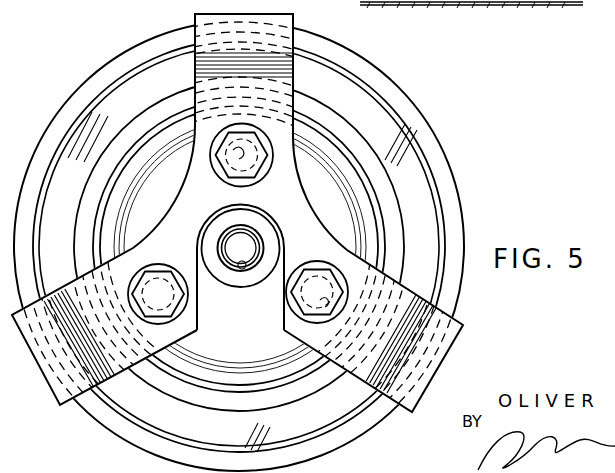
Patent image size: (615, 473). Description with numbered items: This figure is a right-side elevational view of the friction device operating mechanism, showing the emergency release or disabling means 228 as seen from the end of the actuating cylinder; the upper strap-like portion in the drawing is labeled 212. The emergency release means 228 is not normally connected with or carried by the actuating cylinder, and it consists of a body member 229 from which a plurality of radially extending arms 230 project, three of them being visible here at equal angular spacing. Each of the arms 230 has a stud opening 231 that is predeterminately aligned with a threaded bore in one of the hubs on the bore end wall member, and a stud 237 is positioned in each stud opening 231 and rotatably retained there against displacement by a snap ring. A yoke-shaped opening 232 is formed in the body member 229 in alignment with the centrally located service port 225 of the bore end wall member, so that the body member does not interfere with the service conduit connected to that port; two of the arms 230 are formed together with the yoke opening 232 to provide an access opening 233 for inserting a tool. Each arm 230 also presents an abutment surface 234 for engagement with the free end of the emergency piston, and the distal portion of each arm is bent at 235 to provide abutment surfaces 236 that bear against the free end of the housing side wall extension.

The belt 212 is at (537, 4).
The service port 225 is at (241, 269).
The emergency release means 228 is at (190, 93).
The body member 229 is at (302, 203).
The arms 230 is at (183, 146).
The stud openings 231 is at (224, 173).
The yoke-shaped opening 232 is at (198, 323).
The access opening 233 is at (217, 370).
The abutment surface 234 is at (300, 92).
The bend 235 is at (268, 58).
The abutment surfaces 236 is at (183, 29).
The studs 237 is at (267, 169).